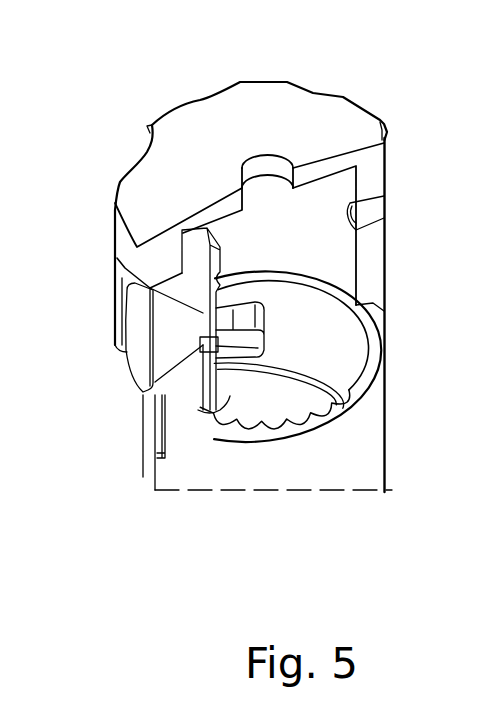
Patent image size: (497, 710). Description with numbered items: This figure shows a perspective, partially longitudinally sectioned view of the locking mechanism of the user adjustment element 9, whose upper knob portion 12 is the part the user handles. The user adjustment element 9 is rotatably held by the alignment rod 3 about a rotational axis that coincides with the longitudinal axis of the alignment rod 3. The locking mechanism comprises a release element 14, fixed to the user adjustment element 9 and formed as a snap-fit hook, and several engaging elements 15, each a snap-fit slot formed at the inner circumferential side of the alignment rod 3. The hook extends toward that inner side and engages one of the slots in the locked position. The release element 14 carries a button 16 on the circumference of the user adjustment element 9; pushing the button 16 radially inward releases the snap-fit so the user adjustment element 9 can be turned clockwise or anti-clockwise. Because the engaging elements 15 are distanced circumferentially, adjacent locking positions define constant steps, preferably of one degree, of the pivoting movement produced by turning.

The user adjustment element 9 is at (259, 263).
The knob portion 12 is at (249, 227).
The release element 14 is at (110, 316).
The button 16 is at (134, 365).
The alignment rod 3 is at (373, 338).
The engaging element 15 is at (165, 398).